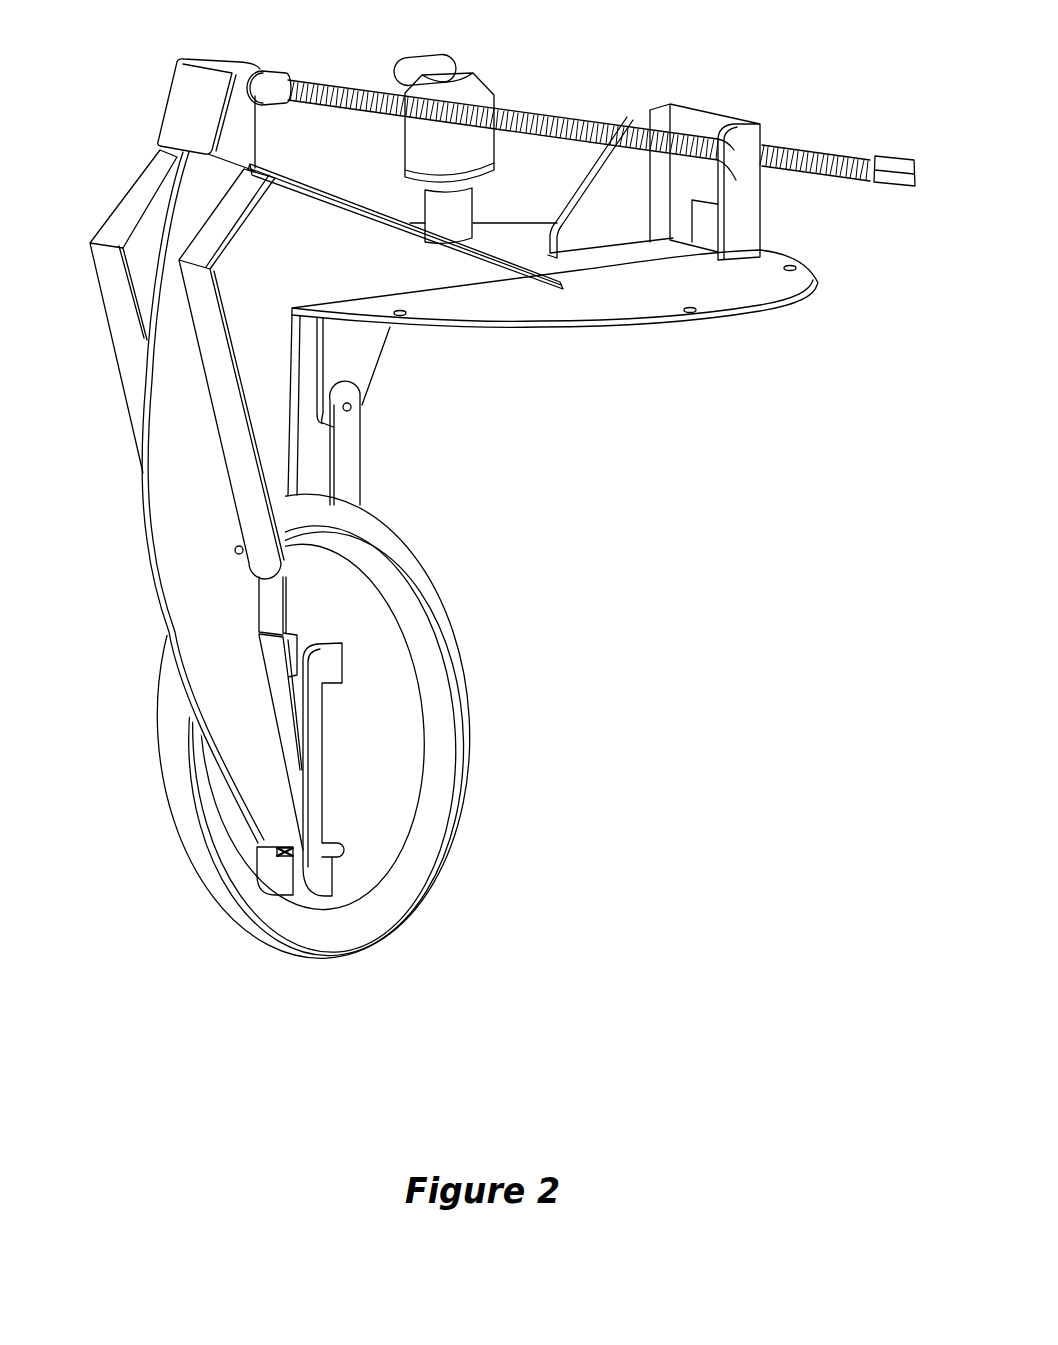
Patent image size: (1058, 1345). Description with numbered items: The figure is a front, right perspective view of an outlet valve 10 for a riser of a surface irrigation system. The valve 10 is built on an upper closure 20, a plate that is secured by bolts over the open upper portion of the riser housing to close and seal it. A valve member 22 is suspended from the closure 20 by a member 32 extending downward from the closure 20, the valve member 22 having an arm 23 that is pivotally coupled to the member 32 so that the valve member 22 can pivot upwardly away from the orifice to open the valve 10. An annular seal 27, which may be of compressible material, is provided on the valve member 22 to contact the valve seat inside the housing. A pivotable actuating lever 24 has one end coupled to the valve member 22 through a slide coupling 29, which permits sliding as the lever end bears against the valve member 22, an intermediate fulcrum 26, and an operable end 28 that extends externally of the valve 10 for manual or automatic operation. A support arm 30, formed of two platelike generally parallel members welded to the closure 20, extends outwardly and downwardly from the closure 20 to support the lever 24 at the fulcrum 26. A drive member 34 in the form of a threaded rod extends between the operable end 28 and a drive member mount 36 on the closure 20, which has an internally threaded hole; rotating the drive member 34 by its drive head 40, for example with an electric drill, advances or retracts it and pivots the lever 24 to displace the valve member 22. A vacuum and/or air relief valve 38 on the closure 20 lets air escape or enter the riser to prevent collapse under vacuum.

The outlet valve 10 is at (688, 635).
The upper closure 20 is at (758, 311).
The valve member 22 is at (377, 822).
The arm 23 is at (350, 457).
The actuating lever 24 is at (180, 587).
The fulcrum 26 is at (236, 548).
The annular seal 27 is at (173, 765).
The operable end 28 is at (180, 101).
The slide coupling 29 is at (368, 773).
The support arm 30 is at (113, 222).
The member 32 is at (365, 357).
The drive member 34 is at (548, 115).
The drive member mount 36 is at (714, 122).
The vacuum and/or air relief valve 38 is at (445, 62).
The drive head 40 is at (898, 160).